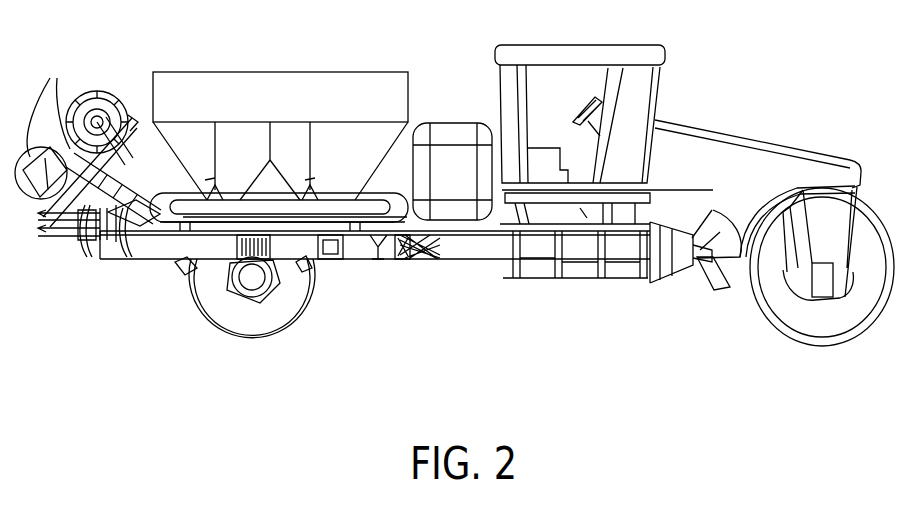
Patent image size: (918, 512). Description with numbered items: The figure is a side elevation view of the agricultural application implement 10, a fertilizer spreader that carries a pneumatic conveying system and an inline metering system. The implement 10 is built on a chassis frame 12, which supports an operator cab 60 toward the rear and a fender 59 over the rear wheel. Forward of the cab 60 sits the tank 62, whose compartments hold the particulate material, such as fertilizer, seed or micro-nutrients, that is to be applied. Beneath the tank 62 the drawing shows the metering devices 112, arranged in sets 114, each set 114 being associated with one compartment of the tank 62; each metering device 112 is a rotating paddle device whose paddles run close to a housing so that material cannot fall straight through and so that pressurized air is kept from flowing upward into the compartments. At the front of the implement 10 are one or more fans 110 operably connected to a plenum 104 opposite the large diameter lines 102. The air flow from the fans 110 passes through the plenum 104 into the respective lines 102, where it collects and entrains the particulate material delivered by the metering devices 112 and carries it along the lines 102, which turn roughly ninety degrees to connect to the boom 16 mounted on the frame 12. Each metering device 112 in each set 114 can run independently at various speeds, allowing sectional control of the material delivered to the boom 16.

The agricultural application implement 10 is at (540, 318).
The chassis frame 12 is at (688, 116).
The boom 16 is at (430, 262).
The fender 59 is at (783, 132).
The operator cab 60 is at (582, 43).
The tank 62 is at (255, 52).
The lines 102 is at (126, 250).
The plenum 104 is at (87, 248).
The fans 110 is at (88, 156).
The metering device 112 is at (232, 300).
The set 114 is at (190, 292).